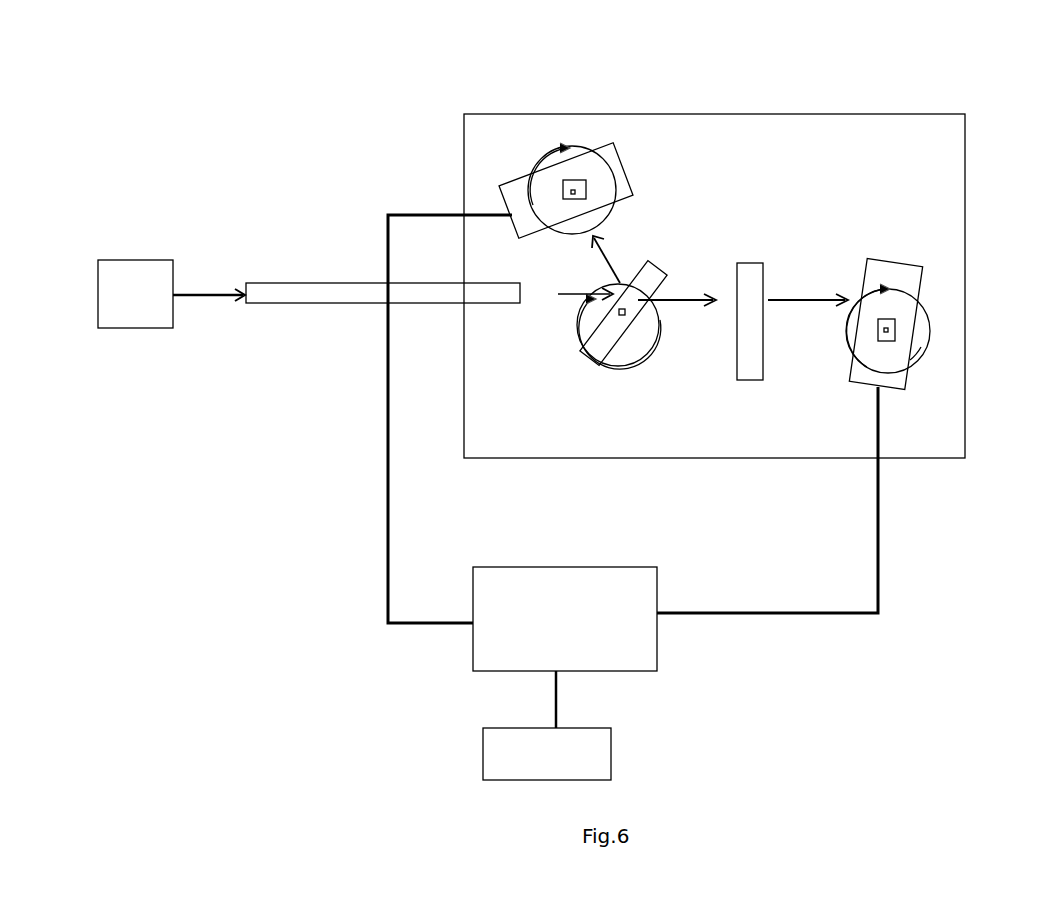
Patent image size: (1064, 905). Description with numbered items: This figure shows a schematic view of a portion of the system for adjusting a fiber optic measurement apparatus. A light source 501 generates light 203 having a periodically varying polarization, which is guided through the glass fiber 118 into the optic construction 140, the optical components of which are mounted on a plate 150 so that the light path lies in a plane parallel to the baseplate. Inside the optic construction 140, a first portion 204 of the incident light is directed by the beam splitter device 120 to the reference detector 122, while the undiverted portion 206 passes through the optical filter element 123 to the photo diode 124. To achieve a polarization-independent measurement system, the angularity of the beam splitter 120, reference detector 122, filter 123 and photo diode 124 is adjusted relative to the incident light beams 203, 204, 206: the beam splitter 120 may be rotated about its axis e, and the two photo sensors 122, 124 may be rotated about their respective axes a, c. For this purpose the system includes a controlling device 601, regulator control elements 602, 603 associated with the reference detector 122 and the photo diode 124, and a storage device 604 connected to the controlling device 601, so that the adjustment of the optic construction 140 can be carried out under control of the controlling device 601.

The optic construction 140 is at (910, 36).
The plate 150 is at (925, 135).
The light source 501 is at (153, 260).
The light 203 is at (213, 298).
The glass fiber 118 is at (296, 283).
The reference detector 122 is at (524, 178).
The regulator control element 602 is at (587, 182).
The axis a is at (577, 188).
The first portion of the incident light 204 is at (585, 259).
The beam splitter device 120 is at (583, 357).
The axis e is at (624, 316).
The undiverted portion 206 is at (743, 314).
The optical filter element 123 is at (743, 382).
The photo diode 124 is at (907, 386).
The regulator control element 603 is at (893, 326).
The axis c is at (893, 331).
The controlling device 601 is at (658, 643).
The storage device 604 is at (483, 748).